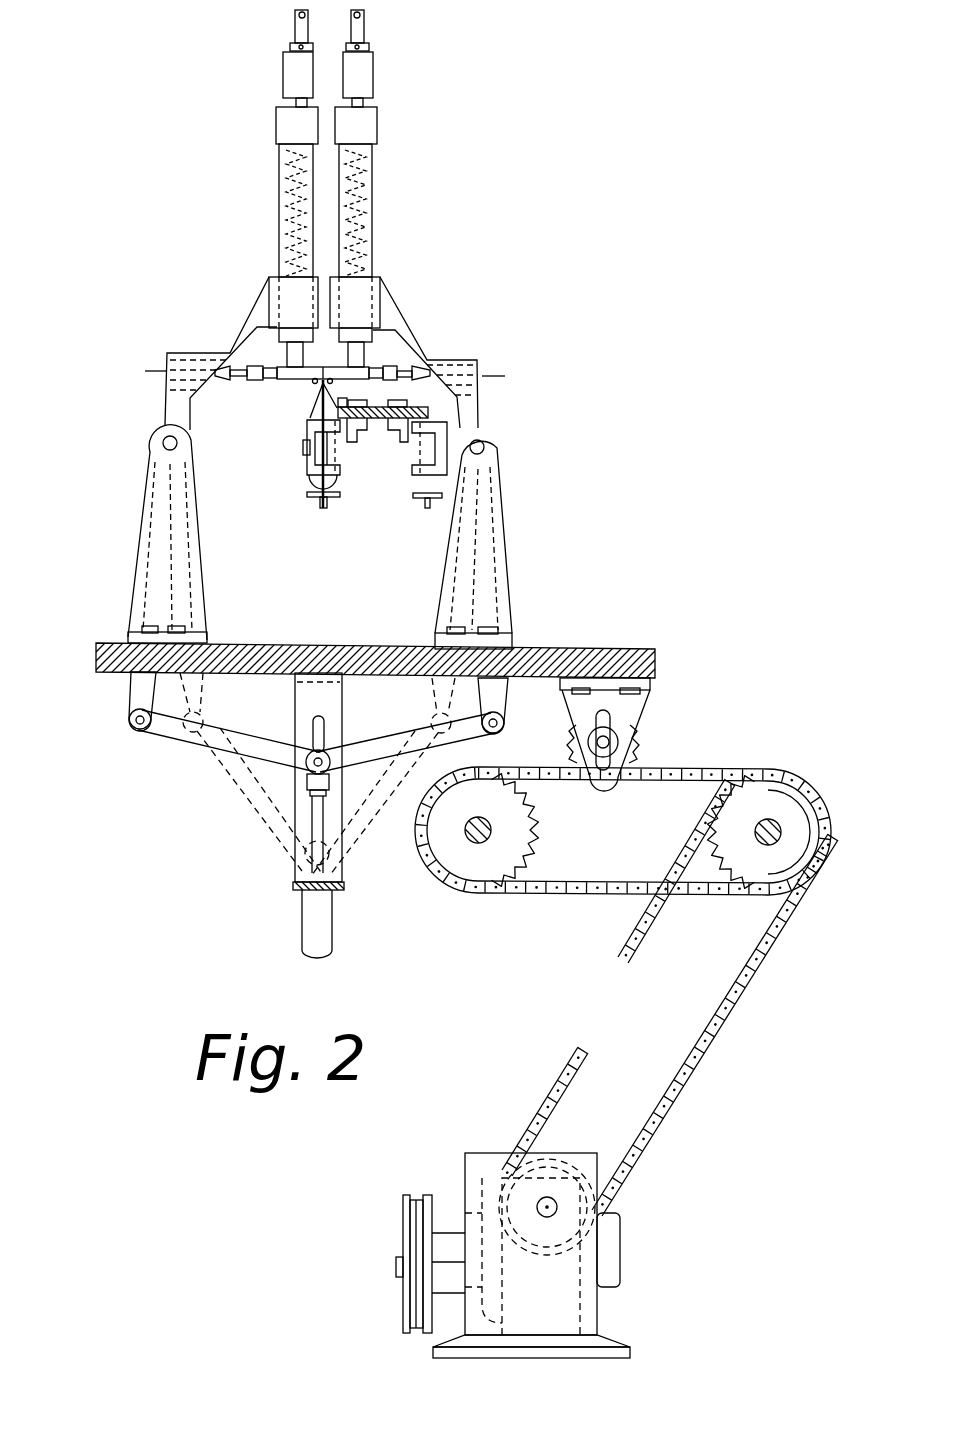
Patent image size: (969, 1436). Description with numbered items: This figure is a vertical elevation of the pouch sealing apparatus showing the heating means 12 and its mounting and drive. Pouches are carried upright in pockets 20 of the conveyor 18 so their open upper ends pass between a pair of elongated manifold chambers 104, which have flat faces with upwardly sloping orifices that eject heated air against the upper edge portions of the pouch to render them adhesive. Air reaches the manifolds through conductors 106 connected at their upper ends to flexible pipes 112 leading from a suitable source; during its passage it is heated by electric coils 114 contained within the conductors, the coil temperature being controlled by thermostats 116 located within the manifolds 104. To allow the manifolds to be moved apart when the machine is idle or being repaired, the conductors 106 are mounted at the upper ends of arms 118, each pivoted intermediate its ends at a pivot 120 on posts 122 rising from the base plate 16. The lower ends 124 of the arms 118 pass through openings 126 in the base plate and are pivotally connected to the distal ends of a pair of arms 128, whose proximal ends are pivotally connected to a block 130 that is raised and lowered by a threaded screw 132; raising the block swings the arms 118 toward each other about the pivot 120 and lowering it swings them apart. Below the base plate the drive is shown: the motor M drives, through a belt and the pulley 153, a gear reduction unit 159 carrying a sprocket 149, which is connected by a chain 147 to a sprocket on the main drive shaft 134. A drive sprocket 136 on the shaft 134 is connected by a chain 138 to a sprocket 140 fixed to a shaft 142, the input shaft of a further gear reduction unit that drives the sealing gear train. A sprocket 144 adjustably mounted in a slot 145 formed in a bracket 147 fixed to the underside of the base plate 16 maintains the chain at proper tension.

The flexible pipes 112 is at (296, 30).
The conductors 106 is at (280, 170).
The electric coils 114 is at (290, 200).
The arms 118 is at (238, 308).
The thermostats 116 is at (218, 381).
The manifold chambers 104 is at (287, 378).
The conveyor 18 is at (424, 396).
The heating means 12 is at (290, 403).
The pivot 120 is at (163, 440).
The posts 122 is at (147, 494).
The lower ends 124 is at (146, 566).
The openings 126 is at (103, 675).
The base plate 16 is at (586, 648).
The pockets 20 is at (415, 455).
The arms 128 is at (177, 741).
The block 130 is at (328, 755).
The threaded screw 132 is at (313, 810).
The chain 147 is at (565, 710).
The slot 145 is at (609, 716).
The sprocket 144 is at (636, 747).
The shaft 142 is at (470, 836).
The sprocket 140 is at (493, 878).
The chain 138 is at (593, 894).
The main drive shaft 134 is at (760, 848).
The drive sprocket 136 is at (798, 870).
The gear reduction unit 159 is at (492, 1157).
The sprocket 149 is at (564, 1160).
The pulley 153 is at (405, 1197).
The motor M is at (571, 1306).